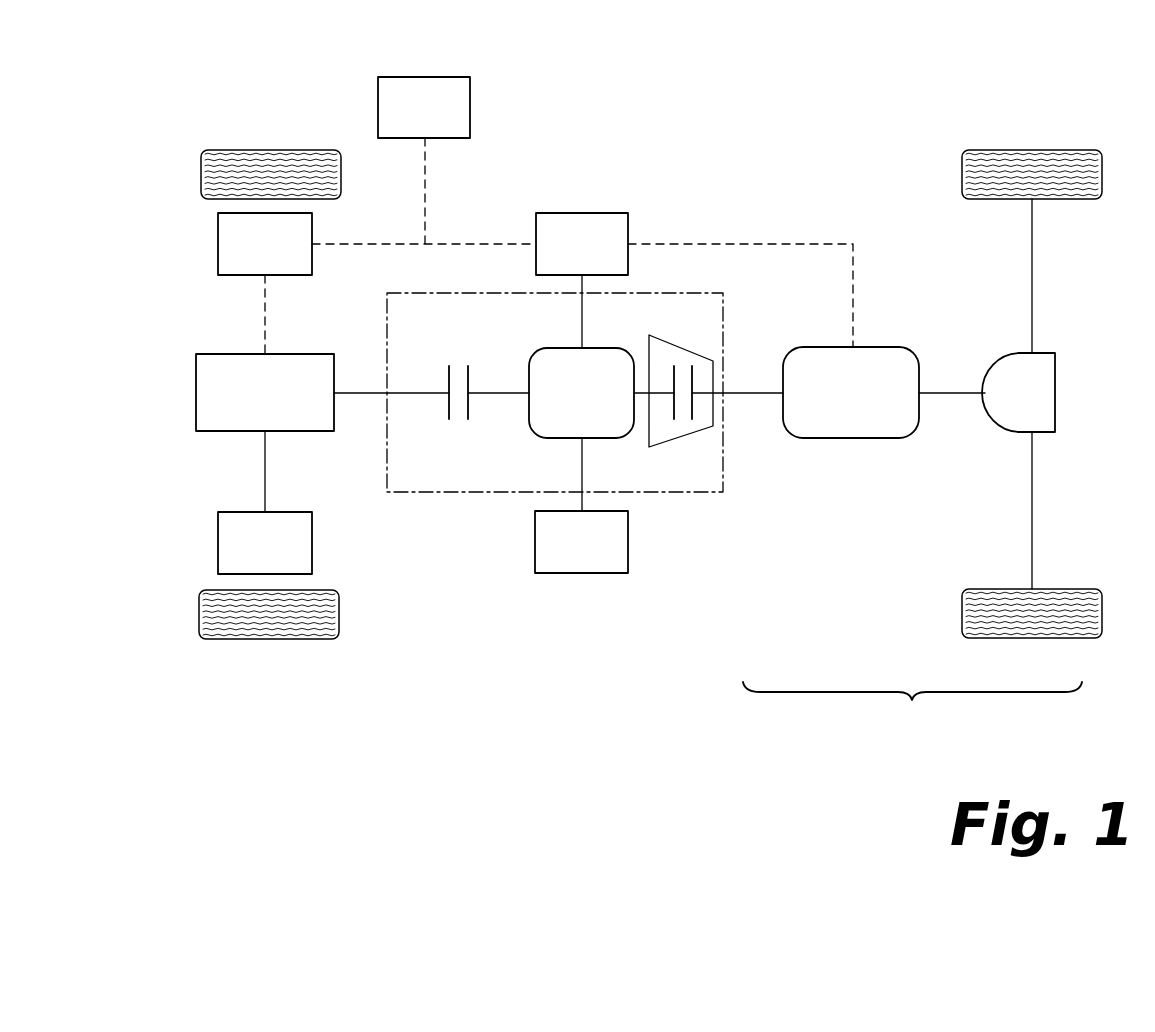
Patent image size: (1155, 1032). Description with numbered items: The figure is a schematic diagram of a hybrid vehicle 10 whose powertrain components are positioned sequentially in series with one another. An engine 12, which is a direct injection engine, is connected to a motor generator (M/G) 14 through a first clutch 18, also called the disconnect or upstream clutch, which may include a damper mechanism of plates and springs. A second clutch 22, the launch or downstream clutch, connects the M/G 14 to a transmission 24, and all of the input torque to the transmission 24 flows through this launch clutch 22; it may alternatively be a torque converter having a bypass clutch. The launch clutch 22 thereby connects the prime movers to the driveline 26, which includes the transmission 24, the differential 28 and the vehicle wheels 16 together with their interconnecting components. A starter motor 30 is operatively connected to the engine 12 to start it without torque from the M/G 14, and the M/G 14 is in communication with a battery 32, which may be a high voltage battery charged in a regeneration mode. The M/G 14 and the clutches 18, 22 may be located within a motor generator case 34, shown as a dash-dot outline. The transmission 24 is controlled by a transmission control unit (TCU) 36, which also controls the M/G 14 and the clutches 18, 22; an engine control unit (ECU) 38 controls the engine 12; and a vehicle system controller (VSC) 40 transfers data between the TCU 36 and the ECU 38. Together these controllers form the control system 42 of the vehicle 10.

The hybrid vehicle 10 is at (818, 90).
The engine 12 is at (196, 392).
The motor generator (M/G) 14 is at (598, 348).
The vehicle wheels 16 is at (1032, 150).
The first clutch 18 is at (449, 413).
The second clutch 22 is at (692, 406).
The transmission 24 is at (877, 347).
The driveline 26 is at (912, 709).
The differential 28 is at (1055, 393).
The starter motor 30 is at (218, 542).
The battery 32 is at (582, 573).
The motor generator case 34 is at (680, 492).
The transmission control unit (TCU) 36 is at (582, 213).
The engine control unit (ECU) 38 is at (218, 244).
The vehicle system controller (VSC) 40 is at (424, 77).
The control system 42 is at (558, 116).